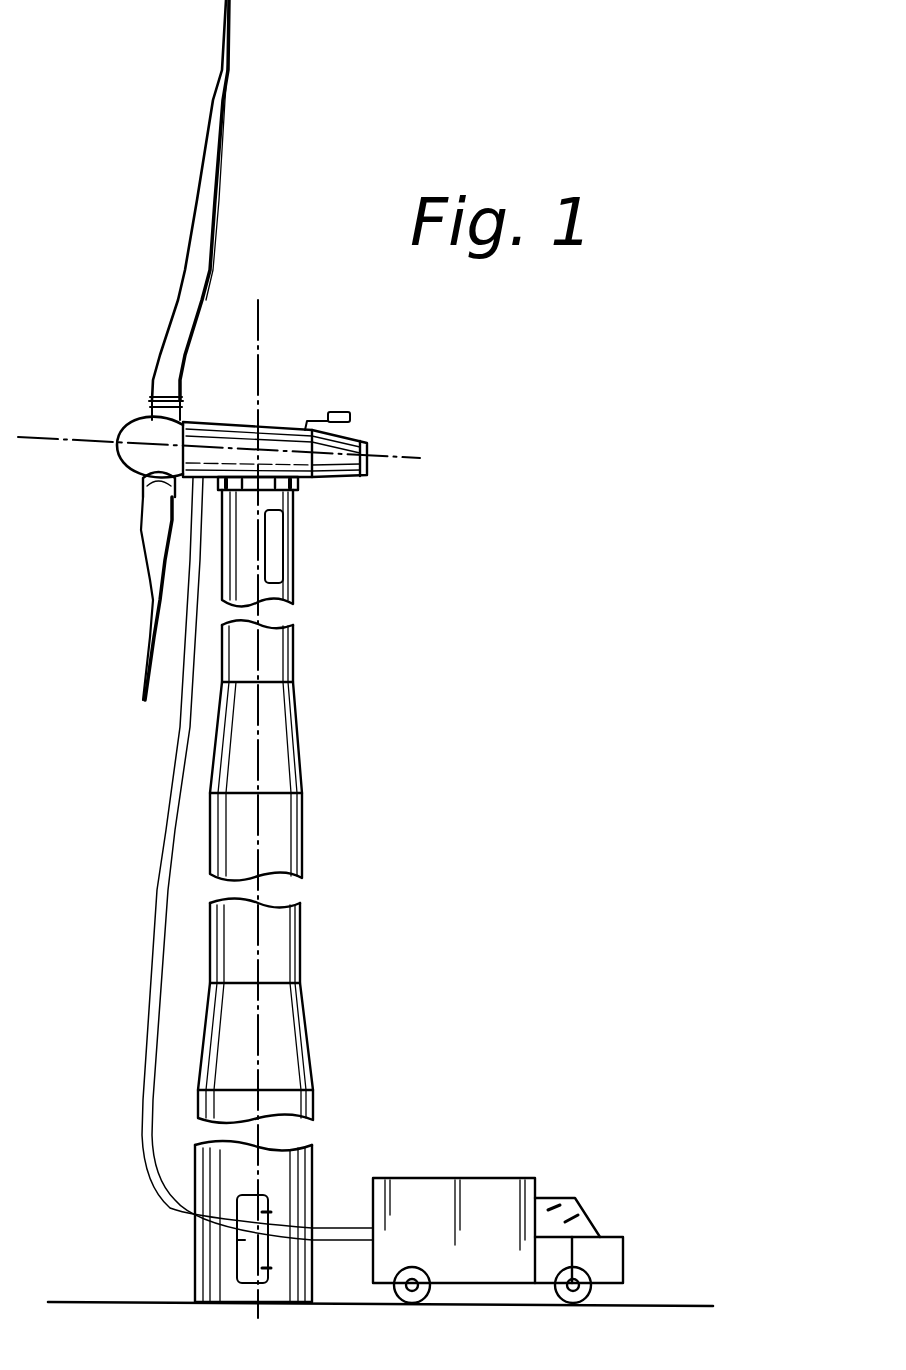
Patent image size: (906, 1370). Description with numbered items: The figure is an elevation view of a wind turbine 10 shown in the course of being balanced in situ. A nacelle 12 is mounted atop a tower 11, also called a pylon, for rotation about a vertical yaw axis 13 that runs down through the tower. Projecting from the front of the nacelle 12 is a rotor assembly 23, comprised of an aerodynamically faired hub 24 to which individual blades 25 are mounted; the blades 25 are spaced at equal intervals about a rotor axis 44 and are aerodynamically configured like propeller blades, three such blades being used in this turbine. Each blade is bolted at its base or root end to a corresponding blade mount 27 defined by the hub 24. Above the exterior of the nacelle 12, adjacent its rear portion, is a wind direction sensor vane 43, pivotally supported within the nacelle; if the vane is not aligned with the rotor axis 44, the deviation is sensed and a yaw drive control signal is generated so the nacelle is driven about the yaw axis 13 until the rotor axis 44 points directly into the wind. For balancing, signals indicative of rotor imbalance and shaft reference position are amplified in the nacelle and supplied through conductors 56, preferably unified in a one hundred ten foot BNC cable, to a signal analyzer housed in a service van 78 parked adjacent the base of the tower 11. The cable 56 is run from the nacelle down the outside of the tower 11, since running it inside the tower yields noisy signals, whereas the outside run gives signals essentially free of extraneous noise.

The wind turbine 10 is at (401, 664).
The tower 11 is at (303, 813).
The nacelle 12 is at (341, 482).
The vertical yaw axis 13 is at (261, 322).
The rotor assembly 23 is at (180, 350).
The hub 24 is at (128, 474).
The blades 25 is at (226, 150).
The blade mount 27 is at (150, 412).
The wind direction sensor vane 43 is at (340, 412).
The rotor axis 44 is at (52, 438).
The conductors 56 is at (162, 852).
The service van 78 is at (437, 1188).